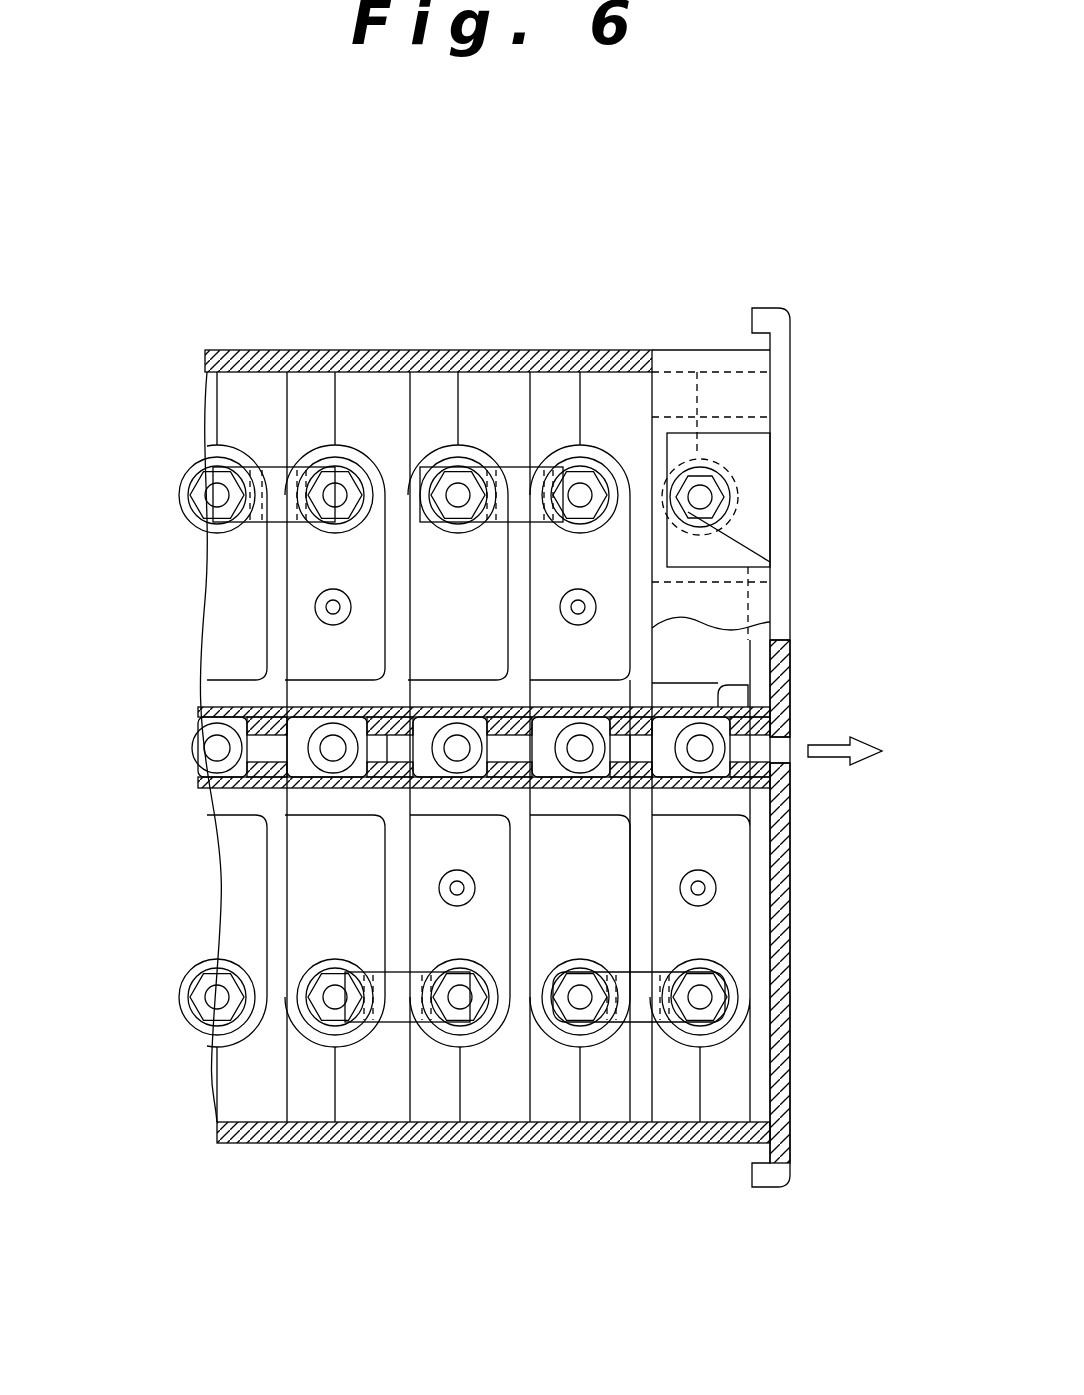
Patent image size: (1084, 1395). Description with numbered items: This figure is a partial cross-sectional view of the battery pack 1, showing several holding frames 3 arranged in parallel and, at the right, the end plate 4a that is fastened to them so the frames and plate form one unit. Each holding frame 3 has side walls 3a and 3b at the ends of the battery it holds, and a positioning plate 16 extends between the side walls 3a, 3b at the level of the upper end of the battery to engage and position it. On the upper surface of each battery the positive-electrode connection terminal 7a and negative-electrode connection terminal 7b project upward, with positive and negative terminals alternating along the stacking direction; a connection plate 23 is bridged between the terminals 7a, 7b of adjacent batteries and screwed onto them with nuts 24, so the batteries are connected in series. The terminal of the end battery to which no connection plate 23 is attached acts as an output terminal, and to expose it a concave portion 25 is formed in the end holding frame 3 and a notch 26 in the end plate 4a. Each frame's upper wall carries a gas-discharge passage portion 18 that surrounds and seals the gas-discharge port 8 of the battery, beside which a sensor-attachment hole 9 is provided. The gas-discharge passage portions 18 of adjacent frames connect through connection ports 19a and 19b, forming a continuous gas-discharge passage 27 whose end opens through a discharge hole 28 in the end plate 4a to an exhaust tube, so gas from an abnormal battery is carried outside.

The battery pack 1 is at (255, 318).
The holding frame 3 is at (345, 345).
The side wall 3a is at (633, 1143).
The side wall 3b is at (600, 475).
The end plate 4a is at (783, 1017).
The positive-electrode connection terminal 7a is at (566, 462).
The negative-electrode connection terminal 7b is at (705, 497).
The gas-discharge port 8 is at (705, 752).
The sensor-attachment hole 9 is at (700, 888).
The positioning plate 16 is at (745, 1075).
The gas-discharge passage portion 18 is at (750, 682).
The connection port 19a is at (647, 785).
The connection port 19b is at (735, 790).
The connection plate 23 is at (515, 470).
The nut 24 is at (600, 483).
The concave portion 25 is at (745, 440).
The notch 26 is at (775, 562).
The gas-discharge passage 27 is at (303, 750).
The discharge hole 28 is at (813, 732).